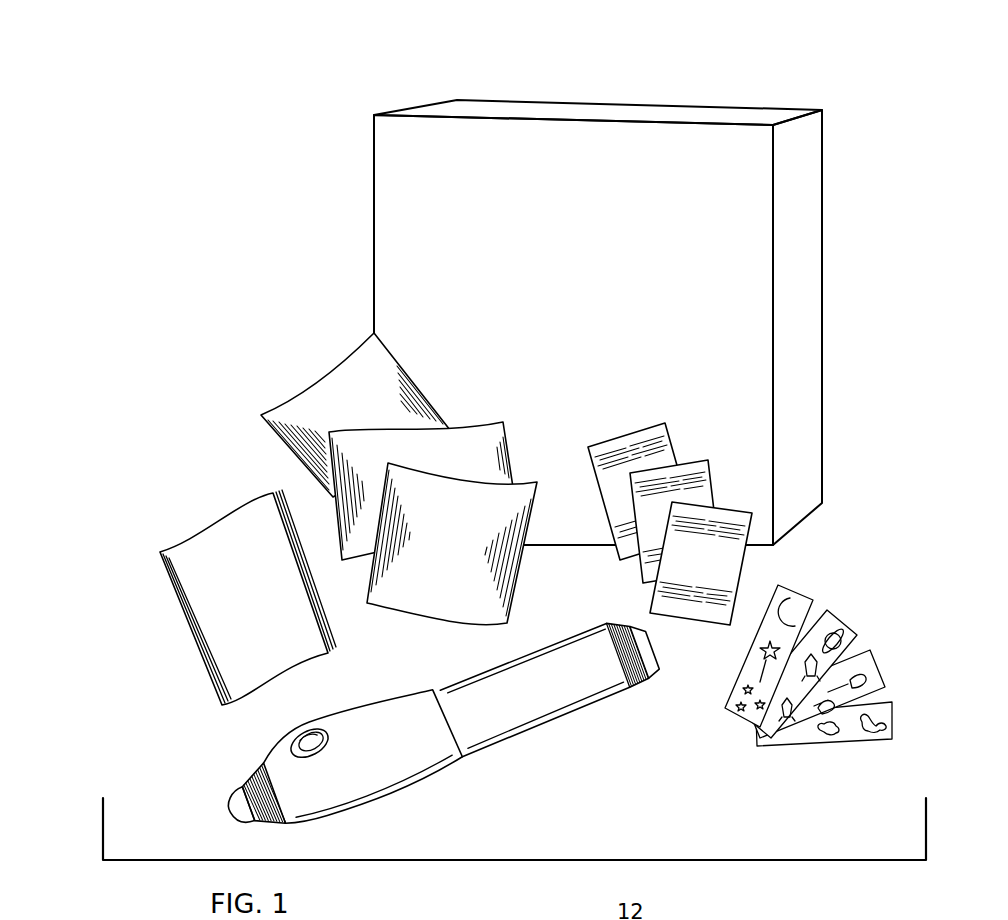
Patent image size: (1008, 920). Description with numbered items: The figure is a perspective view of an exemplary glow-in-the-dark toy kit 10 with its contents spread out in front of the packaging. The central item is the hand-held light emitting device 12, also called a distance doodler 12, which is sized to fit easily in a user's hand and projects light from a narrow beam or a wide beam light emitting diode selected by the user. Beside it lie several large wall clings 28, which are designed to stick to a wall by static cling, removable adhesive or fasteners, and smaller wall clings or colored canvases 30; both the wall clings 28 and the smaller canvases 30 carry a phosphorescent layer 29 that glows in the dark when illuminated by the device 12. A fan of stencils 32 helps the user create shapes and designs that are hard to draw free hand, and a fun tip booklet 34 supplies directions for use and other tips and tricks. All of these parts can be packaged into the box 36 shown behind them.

The glow-in-the-dark toy kit 10 is at (236, 240).
The hand-held light emitting device 12 is at (439, 725).
The wall cling 28 is at (384, 479).
The phosphorescent layer 29 is at (548, 479).
The smaller wall clings/colored canvases 30 is at (726, 524).
The stencils 32 is at (792, 673).
The fun tip booklet 34 is at (243, 597).
The box 36 is at (626, 322).